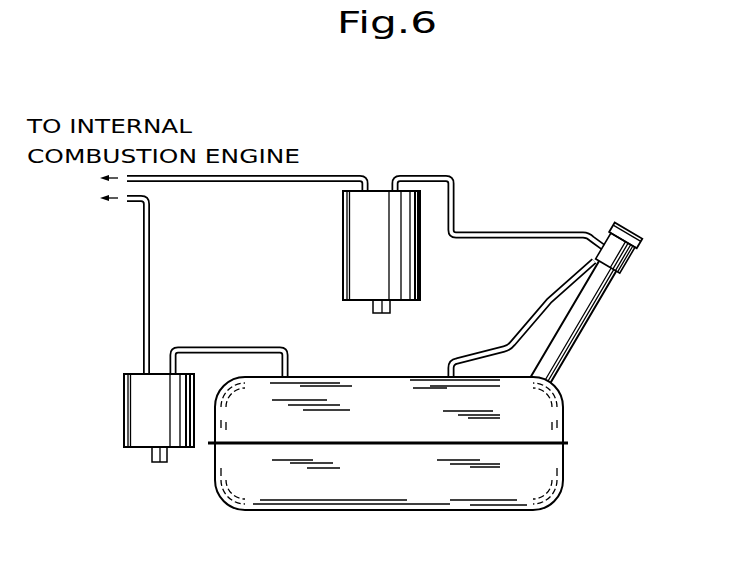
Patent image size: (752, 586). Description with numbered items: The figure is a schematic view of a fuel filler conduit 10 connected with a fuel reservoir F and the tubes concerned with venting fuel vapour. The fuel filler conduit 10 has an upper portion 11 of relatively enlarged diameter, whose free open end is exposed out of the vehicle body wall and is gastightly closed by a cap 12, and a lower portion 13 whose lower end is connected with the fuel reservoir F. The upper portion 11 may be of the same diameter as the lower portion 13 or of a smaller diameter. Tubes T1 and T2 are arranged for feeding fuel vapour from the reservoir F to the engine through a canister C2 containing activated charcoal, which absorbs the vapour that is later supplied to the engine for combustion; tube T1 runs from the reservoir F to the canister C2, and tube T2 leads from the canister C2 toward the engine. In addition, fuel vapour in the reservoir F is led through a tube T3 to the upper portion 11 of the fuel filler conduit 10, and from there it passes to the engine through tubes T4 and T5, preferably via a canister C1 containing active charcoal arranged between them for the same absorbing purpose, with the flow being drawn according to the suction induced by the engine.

The fuel filler conduit 10 is at (606, 312).
The upper portion 11 is at (632, 262).
The cap 12 is at (620, 227).
The lower portion 13 is at (570, 348).
The fuel reservoir F is at (410, 487).
The canister C1 is at (376, 202).
The canister C2 is at (142, 427).
The tube T1 is at (228, 347).
The tube T2 is at (150, 264).
The tube T3 is at (528, 320).
The tube T4 is at (544, 232).
The tube T5 is at (244, 182).